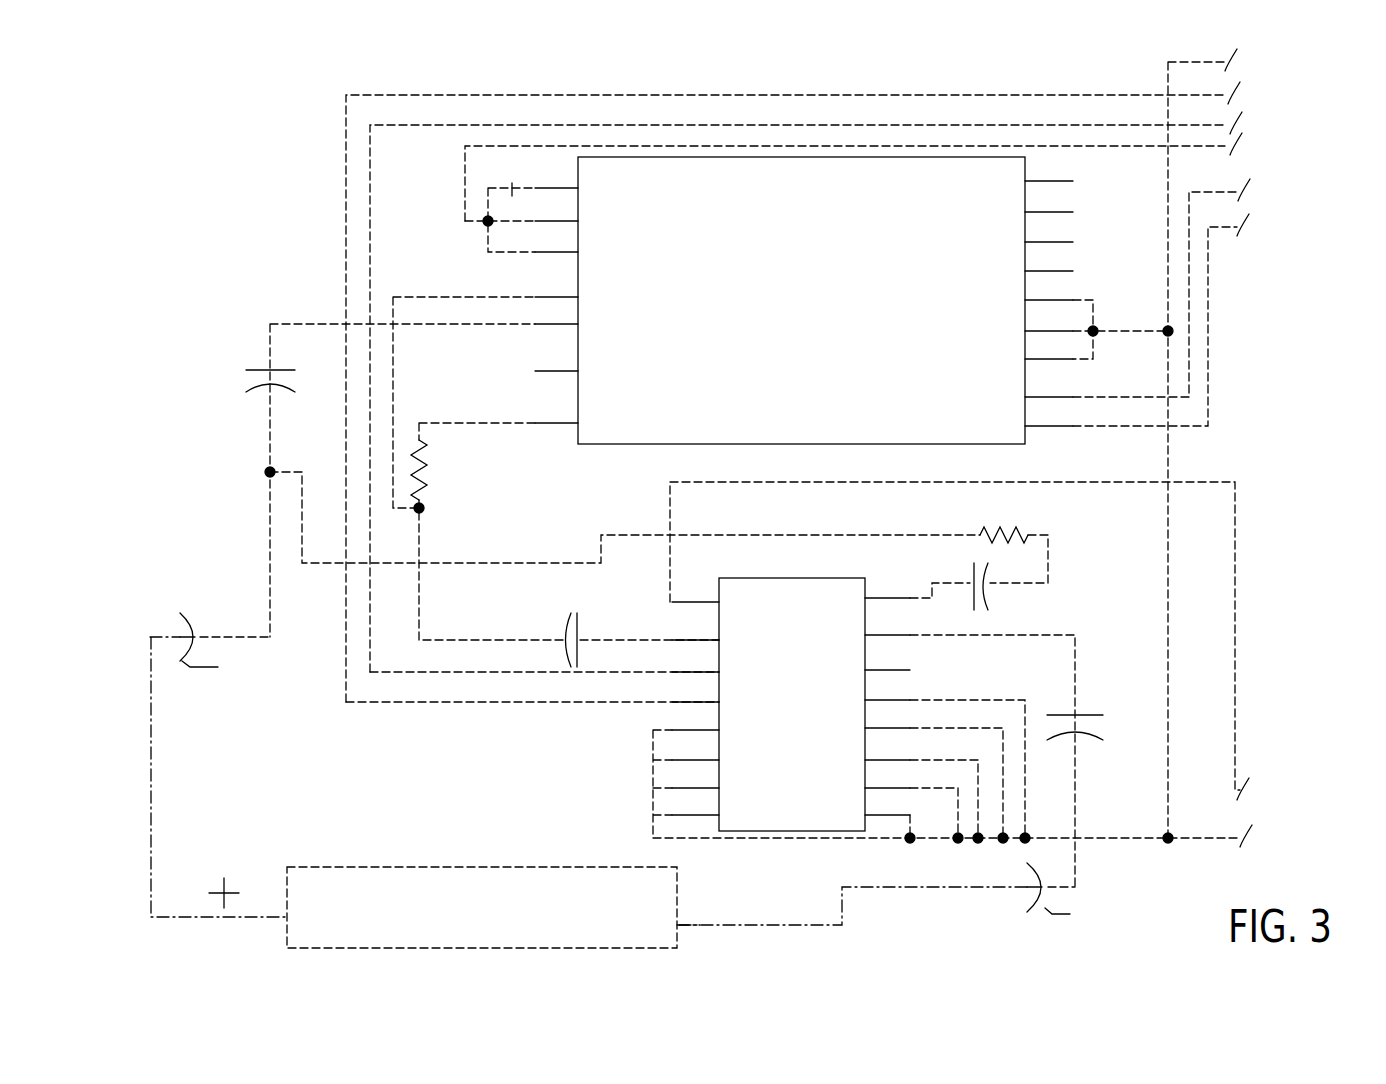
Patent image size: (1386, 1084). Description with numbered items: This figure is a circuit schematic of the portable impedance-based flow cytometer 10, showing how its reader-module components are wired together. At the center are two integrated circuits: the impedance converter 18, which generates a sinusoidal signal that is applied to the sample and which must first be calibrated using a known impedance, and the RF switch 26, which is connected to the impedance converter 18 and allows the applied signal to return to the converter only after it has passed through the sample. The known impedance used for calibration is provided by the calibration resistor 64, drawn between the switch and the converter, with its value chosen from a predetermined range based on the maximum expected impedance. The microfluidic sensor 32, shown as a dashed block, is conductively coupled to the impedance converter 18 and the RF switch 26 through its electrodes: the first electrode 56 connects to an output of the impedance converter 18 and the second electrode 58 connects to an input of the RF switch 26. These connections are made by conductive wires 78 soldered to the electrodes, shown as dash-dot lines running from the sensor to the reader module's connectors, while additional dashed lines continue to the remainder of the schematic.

The portable impedance-based flow cytometer 10 is at (290, 140).
The impedance converter 18 is at (652, 446).
The RF switch 26 is at (793, 832).
The microfluidic sensor 32 is at (493, 922).
The first electrode 56 is at (287, 917).
The second electrode 58 is at (680, 925).
The calibration resistor 64 is at (1022, 532).
The conductive wires 78 is at (153, 852).